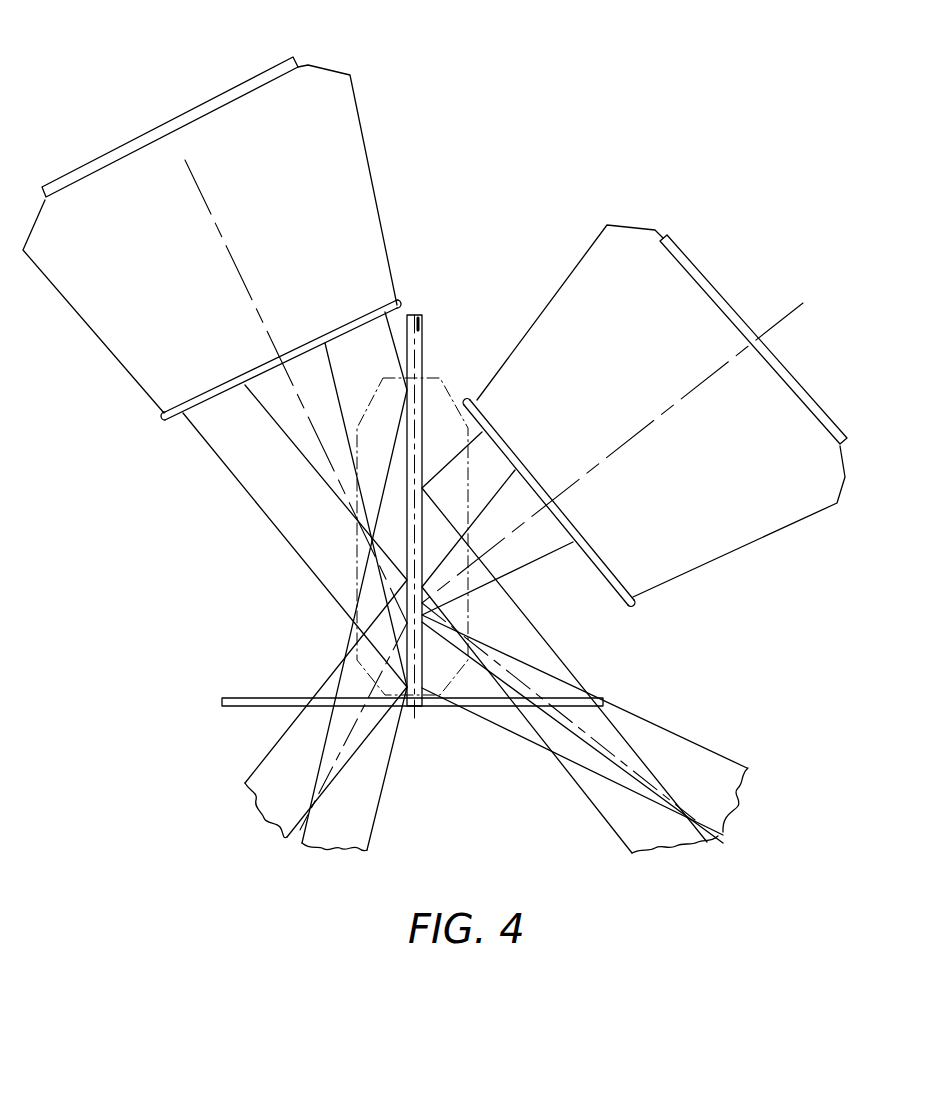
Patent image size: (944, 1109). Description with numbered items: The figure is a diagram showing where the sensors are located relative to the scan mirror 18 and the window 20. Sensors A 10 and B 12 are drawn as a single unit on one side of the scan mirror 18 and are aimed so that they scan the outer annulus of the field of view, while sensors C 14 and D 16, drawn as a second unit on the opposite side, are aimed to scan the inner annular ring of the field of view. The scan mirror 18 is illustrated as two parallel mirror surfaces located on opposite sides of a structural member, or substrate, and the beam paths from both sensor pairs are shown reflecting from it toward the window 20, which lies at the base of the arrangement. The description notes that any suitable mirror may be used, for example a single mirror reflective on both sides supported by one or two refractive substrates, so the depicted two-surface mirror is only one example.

The sensor A 10 is at (635, 415).
The sensor B 12 is at (727, 457).
The sensor C 14 is at (215, 328).
The sensor D 16 is at (130, 200).
The scan mirror 18 is at (418, 326).
The window 20 is at (594, 698).